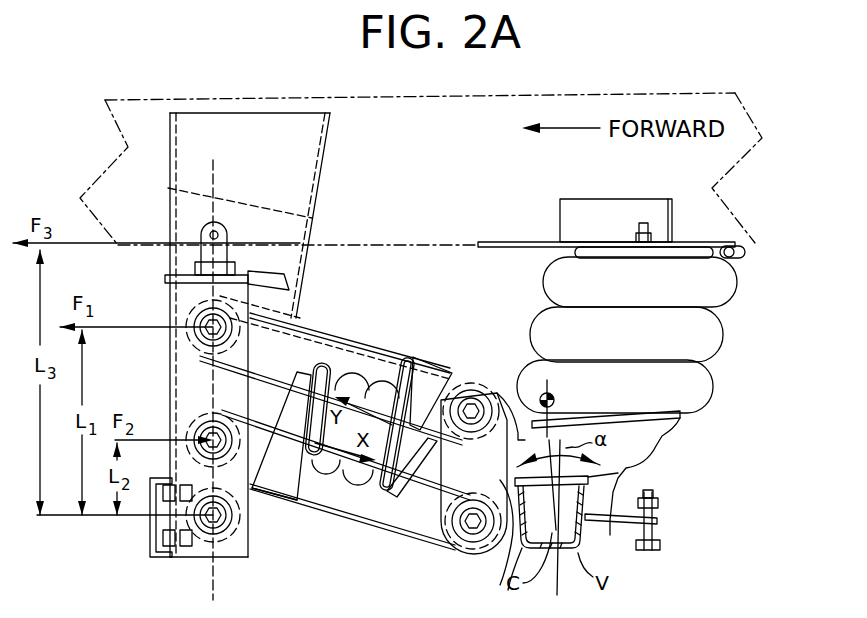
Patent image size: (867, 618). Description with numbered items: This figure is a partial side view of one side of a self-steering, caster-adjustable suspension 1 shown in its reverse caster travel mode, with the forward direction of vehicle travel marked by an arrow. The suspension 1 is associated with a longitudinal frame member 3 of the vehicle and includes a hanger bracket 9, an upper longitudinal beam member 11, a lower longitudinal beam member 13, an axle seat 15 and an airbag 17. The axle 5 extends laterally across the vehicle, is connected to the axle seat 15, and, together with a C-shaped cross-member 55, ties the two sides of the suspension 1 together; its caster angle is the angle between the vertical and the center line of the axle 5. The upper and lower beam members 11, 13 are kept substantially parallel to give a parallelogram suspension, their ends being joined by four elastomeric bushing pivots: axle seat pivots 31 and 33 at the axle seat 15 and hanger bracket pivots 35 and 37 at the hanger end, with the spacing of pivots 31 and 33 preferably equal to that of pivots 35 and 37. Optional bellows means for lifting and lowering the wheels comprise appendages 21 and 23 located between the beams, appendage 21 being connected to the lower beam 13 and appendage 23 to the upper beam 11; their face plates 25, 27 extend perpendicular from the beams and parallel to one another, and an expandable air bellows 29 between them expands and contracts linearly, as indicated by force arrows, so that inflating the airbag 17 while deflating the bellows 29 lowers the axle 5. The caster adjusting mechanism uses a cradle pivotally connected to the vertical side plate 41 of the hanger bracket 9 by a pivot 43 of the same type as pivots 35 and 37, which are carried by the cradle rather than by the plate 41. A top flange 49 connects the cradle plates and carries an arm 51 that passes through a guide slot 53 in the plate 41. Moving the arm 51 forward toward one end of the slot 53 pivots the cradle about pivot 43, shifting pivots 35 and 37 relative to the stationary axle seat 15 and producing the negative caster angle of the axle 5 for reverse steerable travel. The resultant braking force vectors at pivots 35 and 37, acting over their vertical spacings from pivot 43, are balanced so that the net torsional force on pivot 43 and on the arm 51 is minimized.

The suspension 1 is at (742, 377).
The longitudinal frame member 3 is at (360, 116).
The axle 5 is at (585, 527).
The hanger bracket 9 is at (203, 138).
The upper longitudinal beam member 11 is at (369, 360).
The lower longitudinal beam member 13 is at (358, 500).
The axle seat 15 is at (668, 468).
The airbag 17 is at (718, 285).
The appendage 21 is at (276, 493).
The appendage 23 is at (430, 363).
The face plate 25 is at (410, 356).
The face plate 27 is at (300, 500).
The expandable air bellows 29 is at (348, 387).
The axle seat pivot 31 is at (493, 383).
The axle seat pivot 33 is at (470, 557).
The hanger bracket pivot 35 is at (255, 316).
The hanger bracket pivot 37 is at (210, 412).
The vertical side plate 41 is at (187, 260).
The pivot 43 is at (230, 545).
The top flange 49 is at (237, 270).
The arm 51 is at (220, 226).
The guide slot 53 is at (290, 283).
The cross-member 55 is at (160, 558).